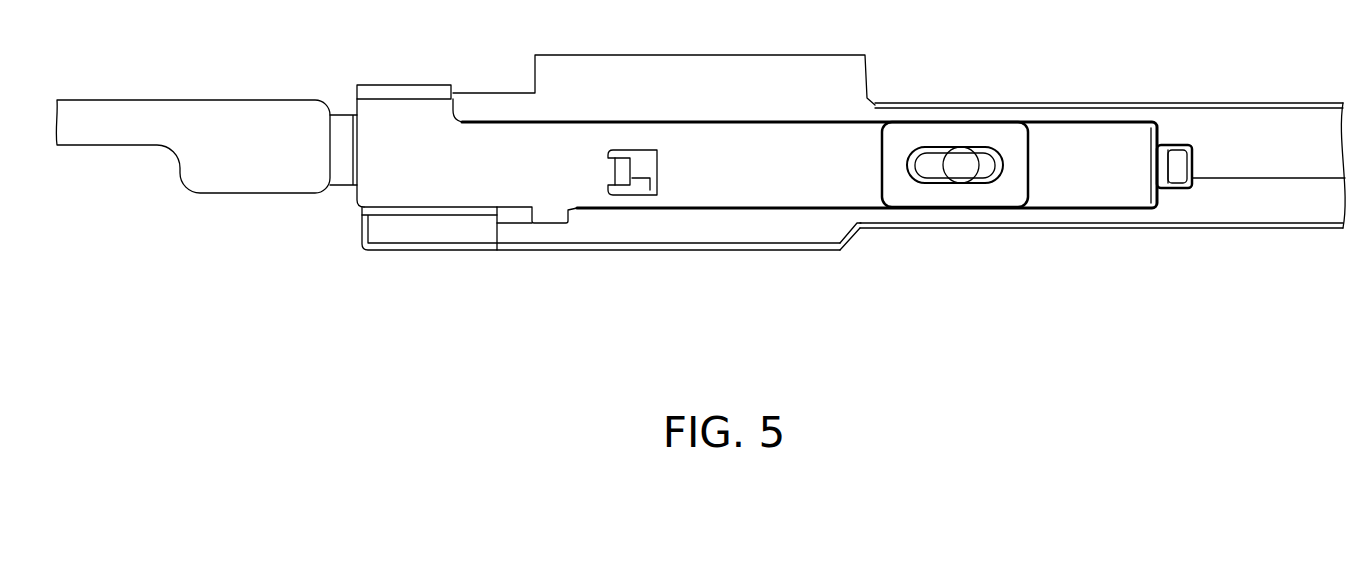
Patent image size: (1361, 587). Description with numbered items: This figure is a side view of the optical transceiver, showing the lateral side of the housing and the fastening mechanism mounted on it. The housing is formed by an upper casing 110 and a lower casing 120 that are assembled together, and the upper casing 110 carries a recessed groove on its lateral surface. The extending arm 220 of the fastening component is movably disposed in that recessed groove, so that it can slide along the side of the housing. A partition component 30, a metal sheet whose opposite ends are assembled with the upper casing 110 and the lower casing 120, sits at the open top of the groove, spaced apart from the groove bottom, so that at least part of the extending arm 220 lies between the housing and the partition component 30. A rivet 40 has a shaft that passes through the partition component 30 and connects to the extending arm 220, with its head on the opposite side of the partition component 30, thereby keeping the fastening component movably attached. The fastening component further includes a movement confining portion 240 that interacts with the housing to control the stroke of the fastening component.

The partition component 30 is at (1010, 185).
The rivet 40 is at (961, 167).
The upper casing 110 is at (1275, 130).
The lower casing 120 is at (1262, 200).
The extending arm 220 is at (743, 180).
The movement confining portion 240 is at (552, 212).